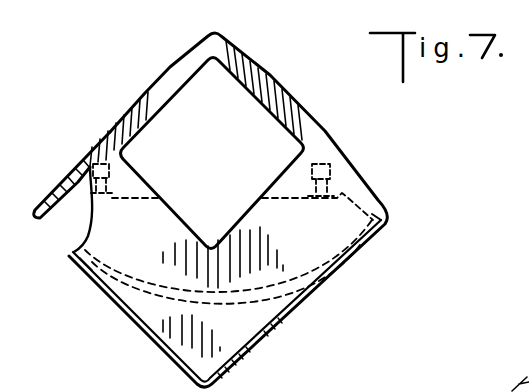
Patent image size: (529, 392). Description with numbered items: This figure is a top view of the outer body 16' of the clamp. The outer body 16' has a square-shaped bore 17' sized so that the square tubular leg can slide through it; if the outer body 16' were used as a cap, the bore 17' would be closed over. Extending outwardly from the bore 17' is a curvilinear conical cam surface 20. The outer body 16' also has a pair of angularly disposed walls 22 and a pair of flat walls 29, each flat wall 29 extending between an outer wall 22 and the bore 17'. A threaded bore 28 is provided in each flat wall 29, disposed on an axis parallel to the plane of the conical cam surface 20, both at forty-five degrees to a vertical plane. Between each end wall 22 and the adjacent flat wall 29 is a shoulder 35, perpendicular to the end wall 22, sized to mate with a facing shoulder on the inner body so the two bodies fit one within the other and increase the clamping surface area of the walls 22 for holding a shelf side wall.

The outer body 16' is at (228, 210).
The bore 17' is at (212, 153).
The curvilinear conical cam surface 20 is at (260, 292).
The angularly disposed wall 22 is at (43, 206).
The threaded bore 28 is at (98, 162).
The flat wall 29 is at (127, 201).
The shoulder 35 is at (85, 185).